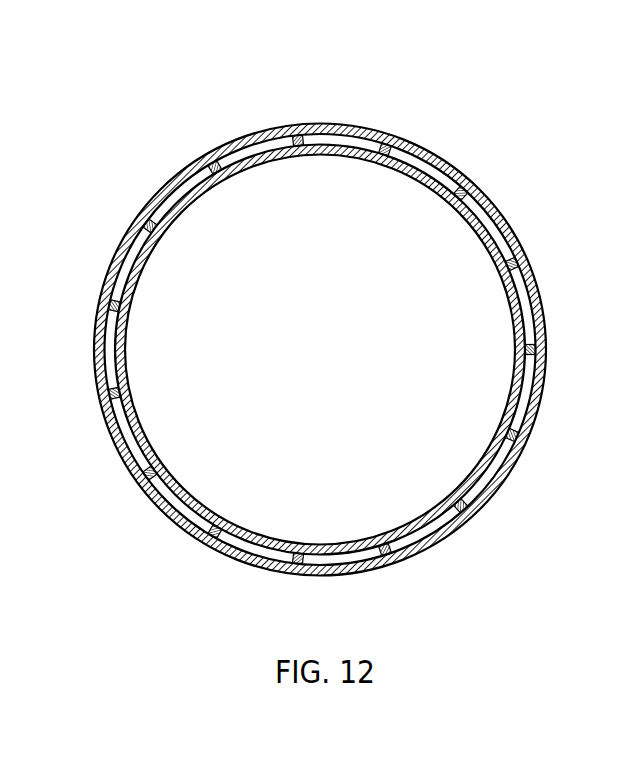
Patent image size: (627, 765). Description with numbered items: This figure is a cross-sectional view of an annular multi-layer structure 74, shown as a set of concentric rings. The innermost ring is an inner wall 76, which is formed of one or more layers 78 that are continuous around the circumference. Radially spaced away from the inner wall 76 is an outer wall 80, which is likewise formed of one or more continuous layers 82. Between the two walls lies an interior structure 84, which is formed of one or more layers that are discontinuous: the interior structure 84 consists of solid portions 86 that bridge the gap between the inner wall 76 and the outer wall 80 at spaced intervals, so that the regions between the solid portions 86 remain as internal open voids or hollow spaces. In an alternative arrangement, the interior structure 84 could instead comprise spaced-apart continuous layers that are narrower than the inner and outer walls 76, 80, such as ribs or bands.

The annular multi-layer structure 74 is at (415, 64).
The inner wall 76 is at (402, 190).
The layers 78 is at (458, 204).
The outer wall 80 is at (470, 158).
The layers 82 is at (484, 198).
The interior structure 84 is at (480, 244).
The solid portions 86 is at (513, 262).